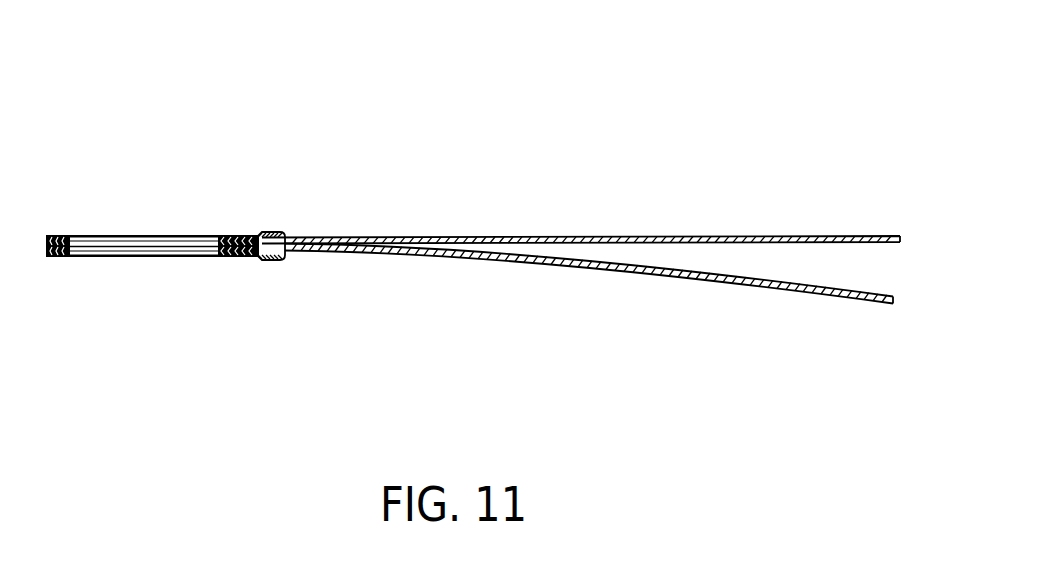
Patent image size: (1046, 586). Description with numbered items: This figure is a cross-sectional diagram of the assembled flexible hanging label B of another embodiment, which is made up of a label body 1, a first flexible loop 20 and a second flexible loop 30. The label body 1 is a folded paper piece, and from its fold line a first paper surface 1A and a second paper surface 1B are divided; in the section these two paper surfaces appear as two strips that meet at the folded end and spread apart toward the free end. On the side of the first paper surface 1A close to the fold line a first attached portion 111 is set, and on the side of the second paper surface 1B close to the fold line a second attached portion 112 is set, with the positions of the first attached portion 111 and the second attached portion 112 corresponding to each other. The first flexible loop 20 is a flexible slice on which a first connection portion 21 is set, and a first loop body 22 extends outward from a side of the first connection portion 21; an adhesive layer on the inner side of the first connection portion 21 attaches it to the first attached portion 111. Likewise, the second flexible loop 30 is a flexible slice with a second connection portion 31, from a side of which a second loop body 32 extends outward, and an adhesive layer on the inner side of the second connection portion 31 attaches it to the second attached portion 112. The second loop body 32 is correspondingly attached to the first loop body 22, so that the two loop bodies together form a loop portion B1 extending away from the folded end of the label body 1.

The label body 1 is at (644, 222).
The first paper surface 1A is at (539, 237).
The second paper surface 1B is at (540, 262).
The flexible hanging label B is at (406, 137).
The loop portion B1 is at (98, 264).
The first flexible loop 20 is at (132, 235).
The second flexible loop 30 is at (130, 259).
The first loop body 22 is at (62, 236).
The second loop body 32 is at (62, 259).
The first attached portion 111 is at (266, 232).
The second attached portion 112 is at (268, 260).
The first connection portion 21 is at (278, 232).
The second connection portion 31 is at (275, 260).